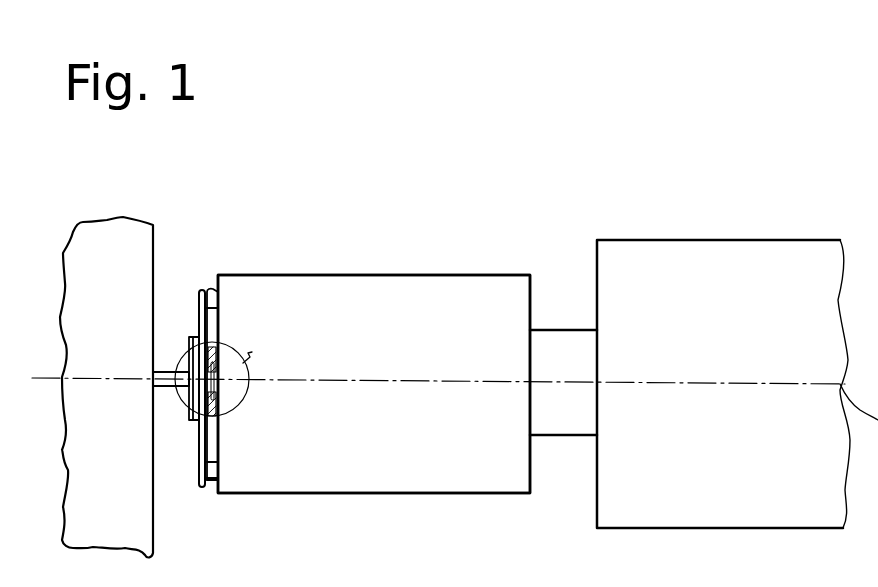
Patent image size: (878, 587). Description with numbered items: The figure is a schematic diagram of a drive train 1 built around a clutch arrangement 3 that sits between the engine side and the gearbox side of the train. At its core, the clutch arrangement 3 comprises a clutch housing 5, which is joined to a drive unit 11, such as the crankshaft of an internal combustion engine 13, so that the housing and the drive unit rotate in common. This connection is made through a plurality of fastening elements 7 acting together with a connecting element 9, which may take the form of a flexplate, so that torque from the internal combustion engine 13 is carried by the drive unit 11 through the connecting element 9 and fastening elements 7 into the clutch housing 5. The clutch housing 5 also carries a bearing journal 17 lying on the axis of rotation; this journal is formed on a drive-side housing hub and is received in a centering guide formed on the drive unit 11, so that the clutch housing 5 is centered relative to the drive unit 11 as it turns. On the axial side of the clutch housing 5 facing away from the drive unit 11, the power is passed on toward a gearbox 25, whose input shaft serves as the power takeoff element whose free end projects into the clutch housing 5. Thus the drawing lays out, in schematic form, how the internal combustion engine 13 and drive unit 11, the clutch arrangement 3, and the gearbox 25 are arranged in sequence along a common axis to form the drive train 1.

The drive train 1 is at (452, 168).
The clutch arrangement 3 is at (478, 326).
The clutch housing 5 is at (385, 308).
The fastening elements 7 is at (216, 298).
The connecting element 9 is at (195, 300).
The drive unit 11 is at (162, 388).
The internal combustion engine 13 is at (113, 255).
The bearing journal 17 is at (572, 348).
The gearbox 25 is at (722, 280).